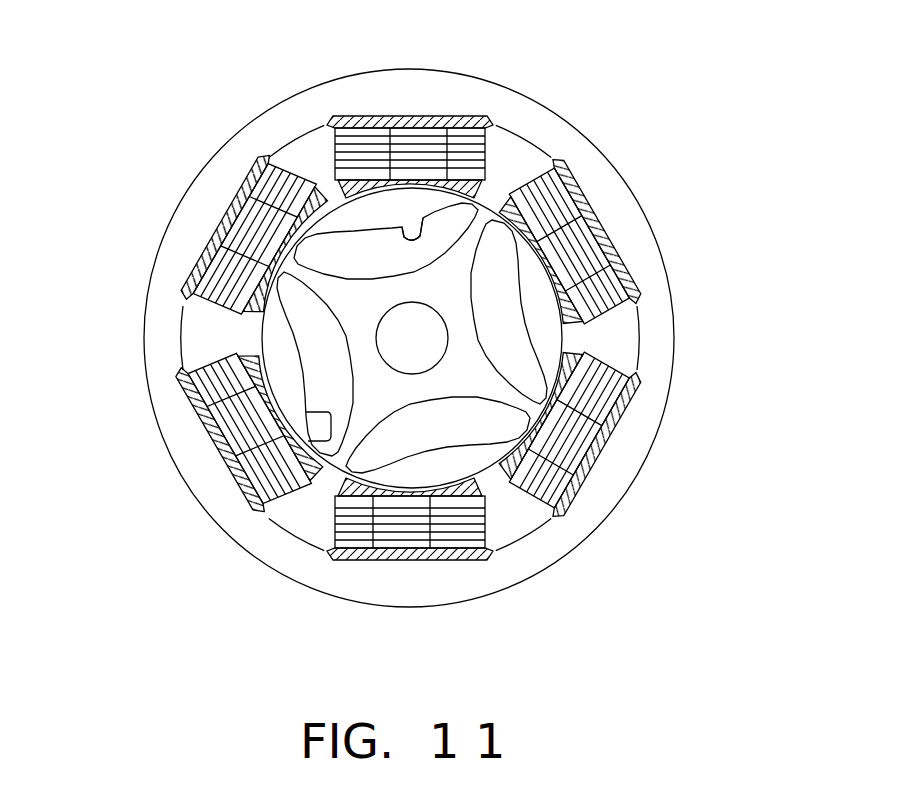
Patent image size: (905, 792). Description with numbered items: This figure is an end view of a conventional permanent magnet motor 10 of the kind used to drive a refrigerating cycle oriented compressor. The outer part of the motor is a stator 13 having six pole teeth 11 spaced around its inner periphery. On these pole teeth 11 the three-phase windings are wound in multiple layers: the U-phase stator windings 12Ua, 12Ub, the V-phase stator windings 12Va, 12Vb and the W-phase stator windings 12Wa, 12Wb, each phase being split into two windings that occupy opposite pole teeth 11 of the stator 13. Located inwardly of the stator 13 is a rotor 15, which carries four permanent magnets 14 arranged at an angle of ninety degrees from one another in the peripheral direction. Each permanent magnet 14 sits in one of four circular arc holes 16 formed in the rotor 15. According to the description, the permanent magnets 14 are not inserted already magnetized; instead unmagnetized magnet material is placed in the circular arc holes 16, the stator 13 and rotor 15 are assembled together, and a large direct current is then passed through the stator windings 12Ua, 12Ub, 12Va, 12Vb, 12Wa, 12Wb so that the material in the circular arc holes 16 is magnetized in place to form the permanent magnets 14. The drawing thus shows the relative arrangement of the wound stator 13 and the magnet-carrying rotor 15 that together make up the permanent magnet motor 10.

The permanent magnet motor 10 is at (797, 94).
The pole teeth 11 is at (445, 158).
The V-phase stator winding 12Va is at (370, 160).
The V-phase stator winding 12Vb is at (478, 560).
The U-phase stator winding 12Ua is at (580, 342).
The U-phase stator winding 12Ub is at (267, 440).
The W-phase stator winding 12Wa is at (262, 252).
The W-phase stator winding 12Wb is at (588, 457).
The stator 13 is at (653, 222).
The permanent magnet 14 is at (402, 318).
The rotor 15 is at (474, 451).
The circular arc hole 16 is at (421, 228).